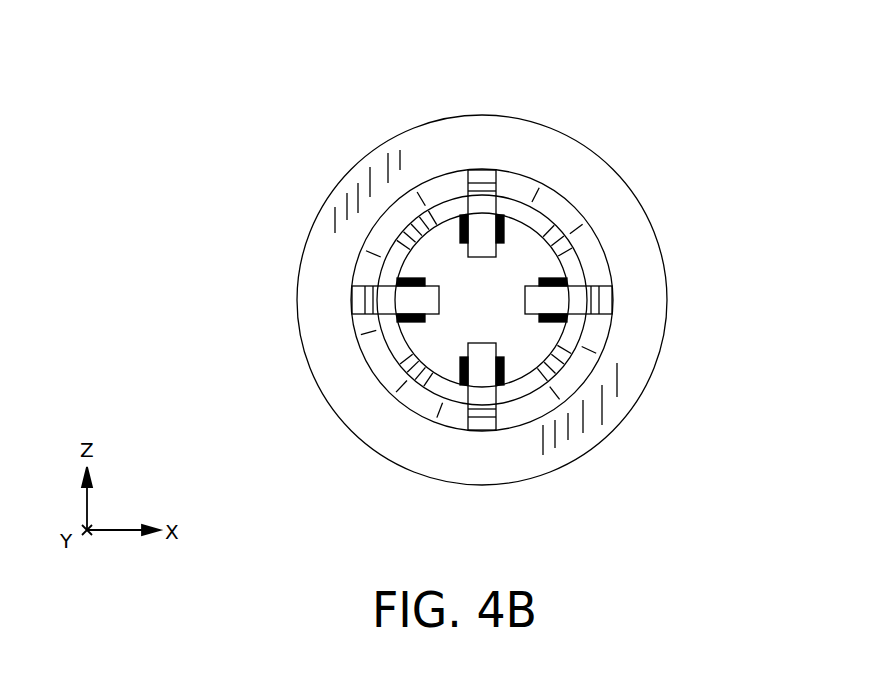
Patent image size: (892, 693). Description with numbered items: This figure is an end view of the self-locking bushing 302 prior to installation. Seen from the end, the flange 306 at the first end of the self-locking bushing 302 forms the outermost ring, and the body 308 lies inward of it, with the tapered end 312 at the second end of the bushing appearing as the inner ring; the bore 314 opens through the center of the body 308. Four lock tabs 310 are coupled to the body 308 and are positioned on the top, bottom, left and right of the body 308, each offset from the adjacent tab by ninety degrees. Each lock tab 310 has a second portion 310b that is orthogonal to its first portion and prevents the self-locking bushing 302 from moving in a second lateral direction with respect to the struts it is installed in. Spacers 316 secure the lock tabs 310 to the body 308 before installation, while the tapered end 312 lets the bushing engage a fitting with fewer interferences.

The self-locking bushing 302 is at (180, 126).
The flange 306 is at (628, 202).
The body 308 is at (605, 343).
The lock tab 310 is at (398, 295).
The second portion of lock tab 310b is at (582, 303).
The tapered end 312 is at (400, 343).
The bore 314 is at (499, 308).
The spacer 316 is at (460, 227).